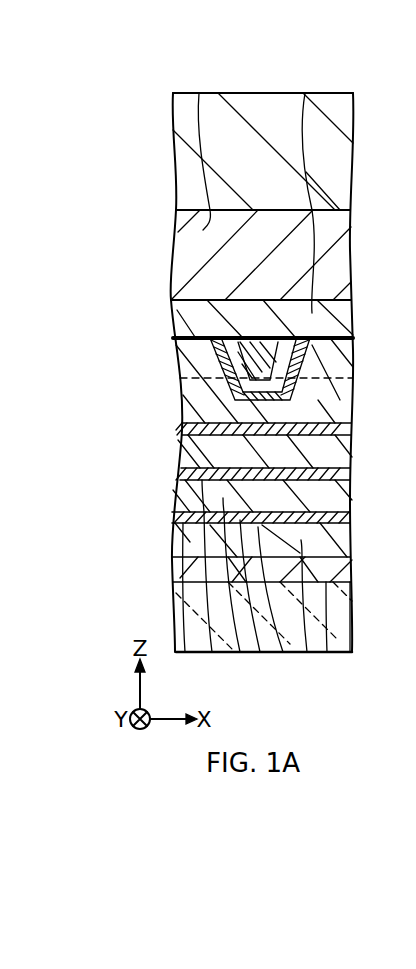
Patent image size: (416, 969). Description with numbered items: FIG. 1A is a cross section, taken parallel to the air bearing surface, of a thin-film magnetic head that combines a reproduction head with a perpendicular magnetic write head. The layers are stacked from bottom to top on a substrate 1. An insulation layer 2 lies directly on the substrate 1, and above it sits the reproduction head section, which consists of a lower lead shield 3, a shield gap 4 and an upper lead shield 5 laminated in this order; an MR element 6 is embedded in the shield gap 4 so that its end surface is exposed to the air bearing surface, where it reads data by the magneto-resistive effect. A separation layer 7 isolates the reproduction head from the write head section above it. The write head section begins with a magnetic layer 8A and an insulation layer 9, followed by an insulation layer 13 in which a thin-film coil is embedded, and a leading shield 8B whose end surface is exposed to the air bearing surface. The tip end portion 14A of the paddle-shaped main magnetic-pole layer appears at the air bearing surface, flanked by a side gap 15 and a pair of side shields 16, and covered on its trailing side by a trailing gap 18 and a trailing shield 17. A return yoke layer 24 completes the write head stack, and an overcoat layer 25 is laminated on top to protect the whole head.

The substrate 1 is at (351, 654).
The insulation layer 2 is at (329, 654).
The lower lead shield 3 is at (308, 654).
The shield gap 4 is at (265, 654).
The upper lead shield 5 is at (243, 654).
The MR element 6 is at (287, 654).
The separation layer 7 is at (215, 654).
The magnetic layer 8A is at (188, 654).
The leading shield 8B is at (180, 410).
The insulation layer 9 is at (178, 432).
The insulation layer 13 is at (190, 380).
The tip end portion 14A is at (178, 340).
The side gap 15 is at (318, 350).
The side shields 16 is at (188, 358).
The trailing shield 17 is at (305, 93).
The trailing gap 18 is at (210, 338).
The return yoke layer 24 is at (199, 93).
The overcoat layer 25 is at (259, 100).